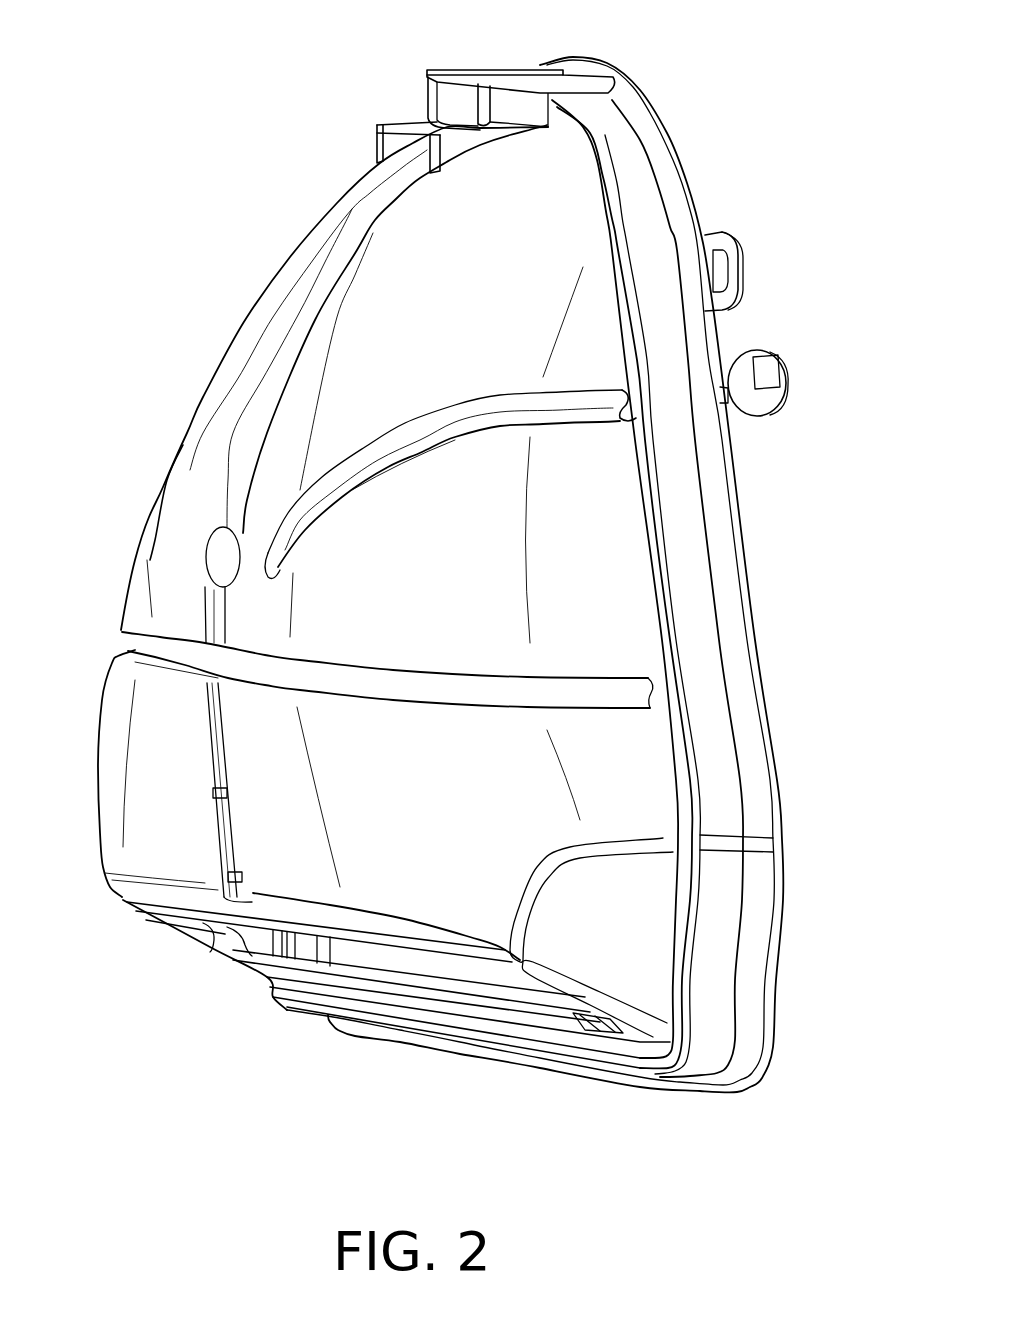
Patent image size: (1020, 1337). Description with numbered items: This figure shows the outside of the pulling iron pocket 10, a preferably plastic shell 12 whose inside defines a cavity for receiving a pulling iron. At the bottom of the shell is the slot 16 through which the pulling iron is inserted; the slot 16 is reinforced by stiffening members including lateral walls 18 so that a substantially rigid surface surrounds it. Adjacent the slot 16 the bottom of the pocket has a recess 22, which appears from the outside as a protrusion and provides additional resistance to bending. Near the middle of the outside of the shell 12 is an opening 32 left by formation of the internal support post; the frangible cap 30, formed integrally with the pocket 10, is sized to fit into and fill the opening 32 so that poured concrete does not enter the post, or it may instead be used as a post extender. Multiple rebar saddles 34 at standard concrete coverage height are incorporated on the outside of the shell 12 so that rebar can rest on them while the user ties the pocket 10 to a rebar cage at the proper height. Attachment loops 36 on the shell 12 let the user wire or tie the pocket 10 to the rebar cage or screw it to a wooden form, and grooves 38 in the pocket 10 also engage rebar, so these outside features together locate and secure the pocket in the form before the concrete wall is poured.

The pulling iron pocket 10 is at (168, 205).
The shell 12 is at (127, 572).
The slot 16 is at (417, 960).
The lateral walls 18 is at (210, 927).
The recess 22 is at (543, 1025).
The frangible cap 30 is at (790, 387).
The opening 32 is at (220, 527).
The rebar saddles 34 is at (423, 90).
The attachment loops 36 is at (740, 262).
The grooves 38 is at (397, 453).